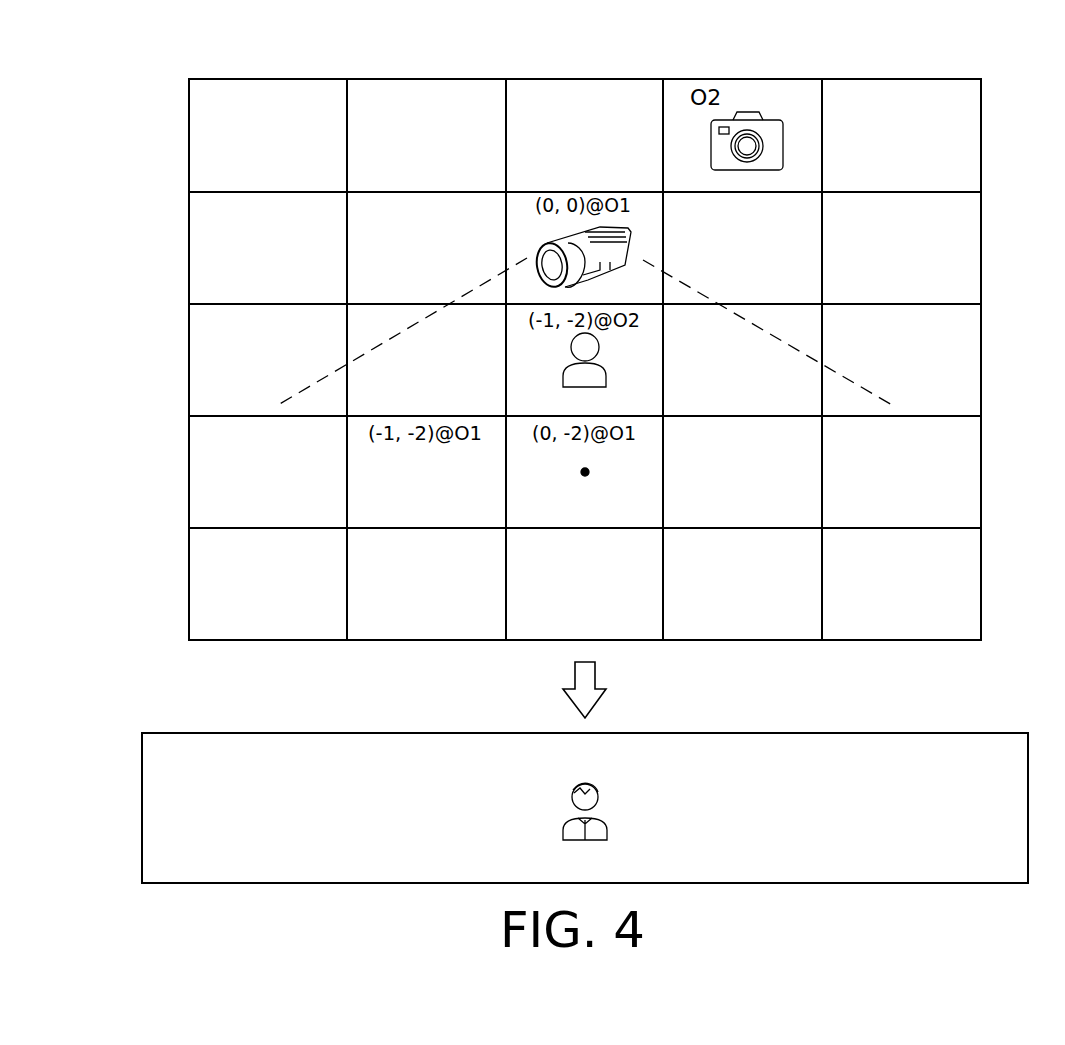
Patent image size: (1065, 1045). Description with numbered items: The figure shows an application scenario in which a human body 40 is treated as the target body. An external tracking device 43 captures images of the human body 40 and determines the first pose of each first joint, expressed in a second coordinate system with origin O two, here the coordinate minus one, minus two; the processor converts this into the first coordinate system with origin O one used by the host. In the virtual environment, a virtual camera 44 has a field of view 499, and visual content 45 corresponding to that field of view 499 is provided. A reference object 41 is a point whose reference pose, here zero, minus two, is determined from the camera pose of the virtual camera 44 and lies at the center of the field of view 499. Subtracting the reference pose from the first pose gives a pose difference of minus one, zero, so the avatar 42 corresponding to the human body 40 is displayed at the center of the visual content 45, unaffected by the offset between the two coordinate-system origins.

The human body 40 is at (603, 375).
The reference object 41 is at (580, 471).
The avatar 42 is at (603, 828).
The external tracking device 43 is at (770, 143).
The virtual camera 44 is at (620, 252).
The visual content 45 is at (163, 730).
The field of view 499 is at (398, 322).